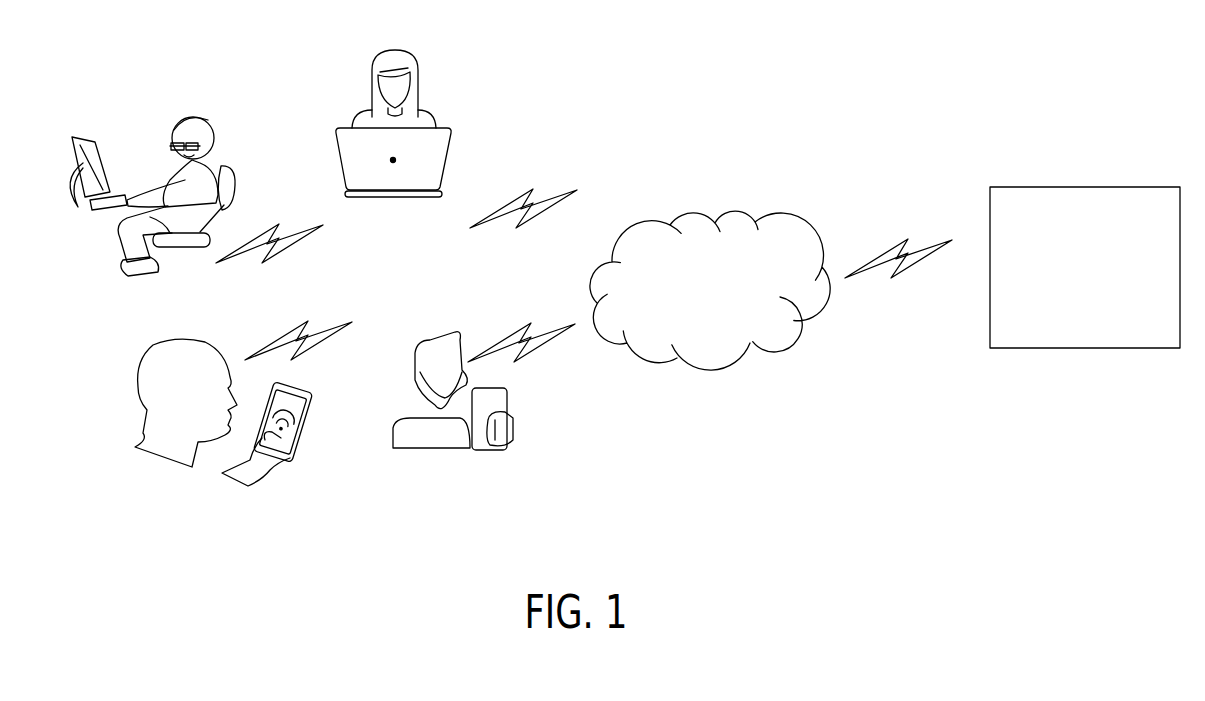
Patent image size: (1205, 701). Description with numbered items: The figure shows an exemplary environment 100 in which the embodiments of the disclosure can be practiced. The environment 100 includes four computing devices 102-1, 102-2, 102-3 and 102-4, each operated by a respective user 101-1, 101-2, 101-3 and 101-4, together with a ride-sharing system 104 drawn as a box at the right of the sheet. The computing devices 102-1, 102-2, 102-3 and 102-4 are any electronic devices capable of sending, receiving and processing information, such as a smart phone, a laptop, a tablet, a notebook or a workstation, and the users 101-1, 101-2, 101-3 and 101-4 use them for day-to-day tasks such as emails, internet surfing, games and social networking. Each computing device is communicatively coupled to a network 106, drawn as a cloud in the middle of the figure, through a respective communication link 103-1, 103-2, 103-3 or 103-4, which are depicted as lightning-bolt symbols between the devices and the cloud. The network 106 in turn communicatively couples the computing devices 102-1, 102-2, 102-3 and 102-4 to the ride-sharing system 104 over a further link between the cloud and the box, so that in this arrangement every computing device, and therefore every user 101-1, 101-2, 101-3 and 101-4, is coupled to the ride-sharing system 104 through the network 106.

The environment 100 is at (750, 168).
The user 101-1 is at (218, 138).
The user 101-2 is at (417, 90).
The user 101-3 is at (170, 462).
The user 101-4 is at (402, 450).
The computing device 102-1 is at (87, 210).
The computing device 102-2 is at (386, 198).
The computing device 102-3 is at (263, 478).
The computing device 102-4 is at (487, 450).
The communication link 103-1 is at (312, 235).
The communication link 103-2 is at (530, 225).
The communication link 103-3 is at (340, 333).
The communication link 103-4 is at (555, 340).
The ride-sharing system 104 is at (1078, 348).
The network 106 is at (733, 372).